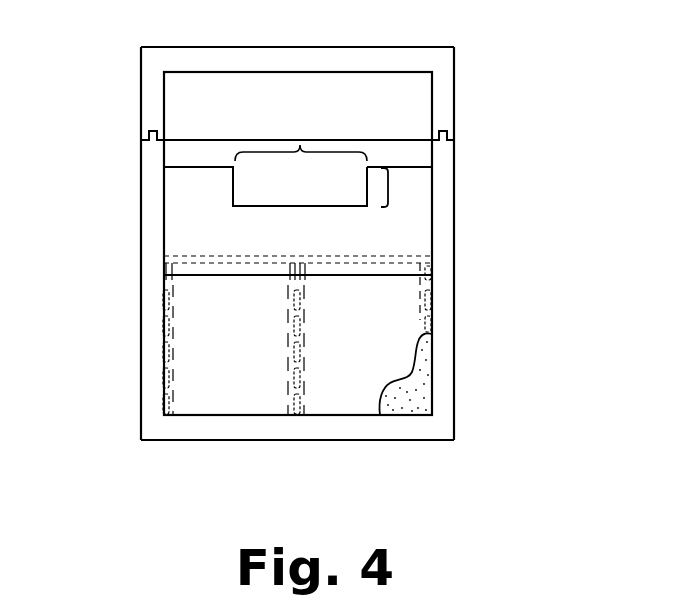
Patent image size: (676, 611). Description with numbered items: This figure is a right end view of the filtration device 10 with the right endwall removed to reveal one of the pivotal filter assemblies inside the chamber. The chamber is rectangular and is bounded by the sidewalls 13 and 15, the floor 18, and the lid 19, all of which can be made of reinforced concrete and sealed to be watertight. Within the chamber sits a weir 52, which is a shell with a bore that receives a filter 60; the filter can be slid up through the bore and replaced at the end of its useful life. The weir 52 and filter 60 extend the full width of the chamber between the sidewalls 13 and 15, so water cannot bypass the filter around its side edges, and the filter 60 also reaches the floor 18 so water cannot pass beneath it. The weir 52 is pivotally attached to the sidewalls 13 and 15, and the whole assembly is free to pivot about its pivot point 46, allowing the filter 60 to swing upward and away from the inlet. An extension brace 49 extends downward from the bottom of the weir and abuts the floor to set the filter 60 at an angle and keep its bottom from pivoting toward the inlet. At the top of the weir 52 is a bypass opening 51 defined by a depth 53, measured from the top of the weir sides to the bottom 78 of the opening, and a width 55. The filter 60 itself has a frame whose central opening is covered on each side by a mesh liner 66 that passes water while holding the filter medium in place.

The filtration device 10 is at (328, 261).
The sidewall 13 is at (150, 321).
The sidewall 15 is at (446, 283).
The floor 18 is at (211, 428).
The lid 19 is at (442, 83).
The pivot point 46 is at (166, 262).
The extension brace 49 is at (303, 295).
The bypass opening 51 is at (322, 182).
The weir 52 is at (184, 185).
The depth 53 is at (388, 187).
The width 55 is at (300, 143).
The filter 60 is at (182, 355).
The mesh liner 66 is at (408, 393).
The bottom of the opening 78 is at (270, 205).